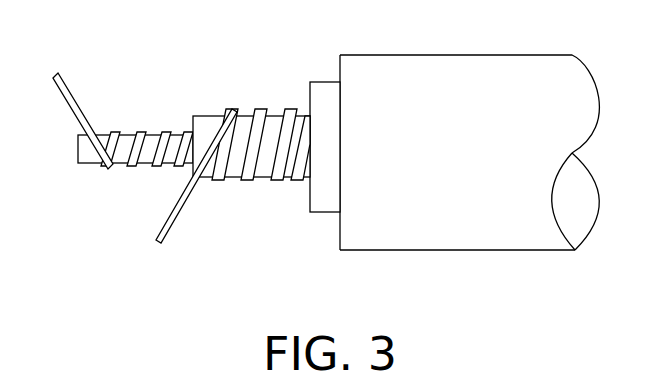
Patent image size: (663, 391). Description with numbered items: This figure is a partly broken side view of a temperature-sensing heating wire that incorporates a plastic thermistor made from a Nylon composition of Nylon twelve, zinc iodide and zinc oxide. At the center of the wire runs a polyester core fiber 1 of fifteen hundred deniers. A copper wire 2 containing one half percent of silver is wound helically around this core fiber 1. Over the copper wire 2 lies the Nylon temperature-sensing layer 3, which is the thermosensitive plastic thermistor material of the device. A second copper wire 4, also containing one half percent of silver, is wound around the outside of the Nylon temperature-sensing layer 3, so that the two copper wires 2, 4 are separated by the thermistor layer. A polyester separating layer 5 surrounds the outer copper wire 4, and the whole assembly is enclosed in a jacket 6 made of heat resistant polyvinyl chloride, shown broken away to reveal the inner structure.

The polyester core fiber 1 is at (87, 155).
The copper wire 2 is at (65, 92).
The Nylon temperature-sensing layer 3 is at (210, 123).
The copper wire 4 is at (158, 232).
The polyester separating layer 5 is at (515, 73).
The jacket 6 is at (317, 197).